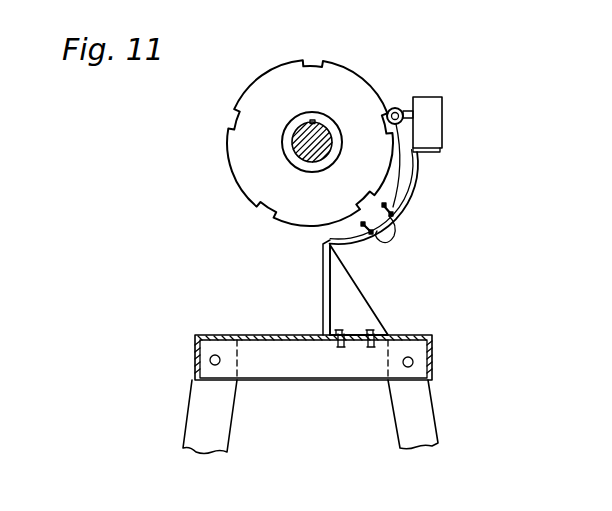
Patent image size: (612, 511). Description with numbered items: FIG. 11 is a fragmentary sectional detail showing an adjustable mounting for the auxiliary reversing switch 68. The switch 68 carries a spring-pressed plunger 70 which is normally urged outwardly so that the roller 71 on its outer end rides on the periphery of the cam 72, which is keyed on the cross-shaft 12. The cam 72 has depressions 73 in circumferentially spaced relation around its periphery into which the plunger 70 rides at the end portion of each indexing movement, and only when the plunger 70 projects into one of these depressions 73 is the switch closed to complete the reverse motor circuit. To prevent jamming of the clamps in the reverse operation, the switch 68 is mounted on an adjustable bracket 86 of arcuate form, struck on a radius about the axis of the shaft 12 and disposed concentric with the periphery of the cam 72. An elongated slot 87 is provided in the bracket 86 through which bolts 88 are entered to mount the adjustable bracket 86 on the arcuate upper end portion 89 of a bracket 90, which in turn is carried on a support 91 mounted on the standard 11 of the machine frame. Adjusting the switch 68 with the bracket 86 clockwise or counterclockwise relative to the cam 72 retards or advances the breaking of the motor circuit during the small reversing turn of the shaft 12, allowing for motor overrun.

The standard 11 is at (428, 401).
The cross-shaft 12 is at (309, 158).
The auxiliary reversing switch 68 is at (442, 129).
The plunger 70 is at (413, 112).
The roller 71 is at (398, 108).
The cam 72 is at (357, 83).
The depression 73 is at (390, 129).
The adjustable bracket 86 is at (414, 186).
The elongated slot 87 is at (396, 208).
The bolts 88 is at (394, 238).
The arcuate upper end portion 89 is at (341, 250).
The bracket 90 is at (323, 307).
The support 91 is at (400, 336).